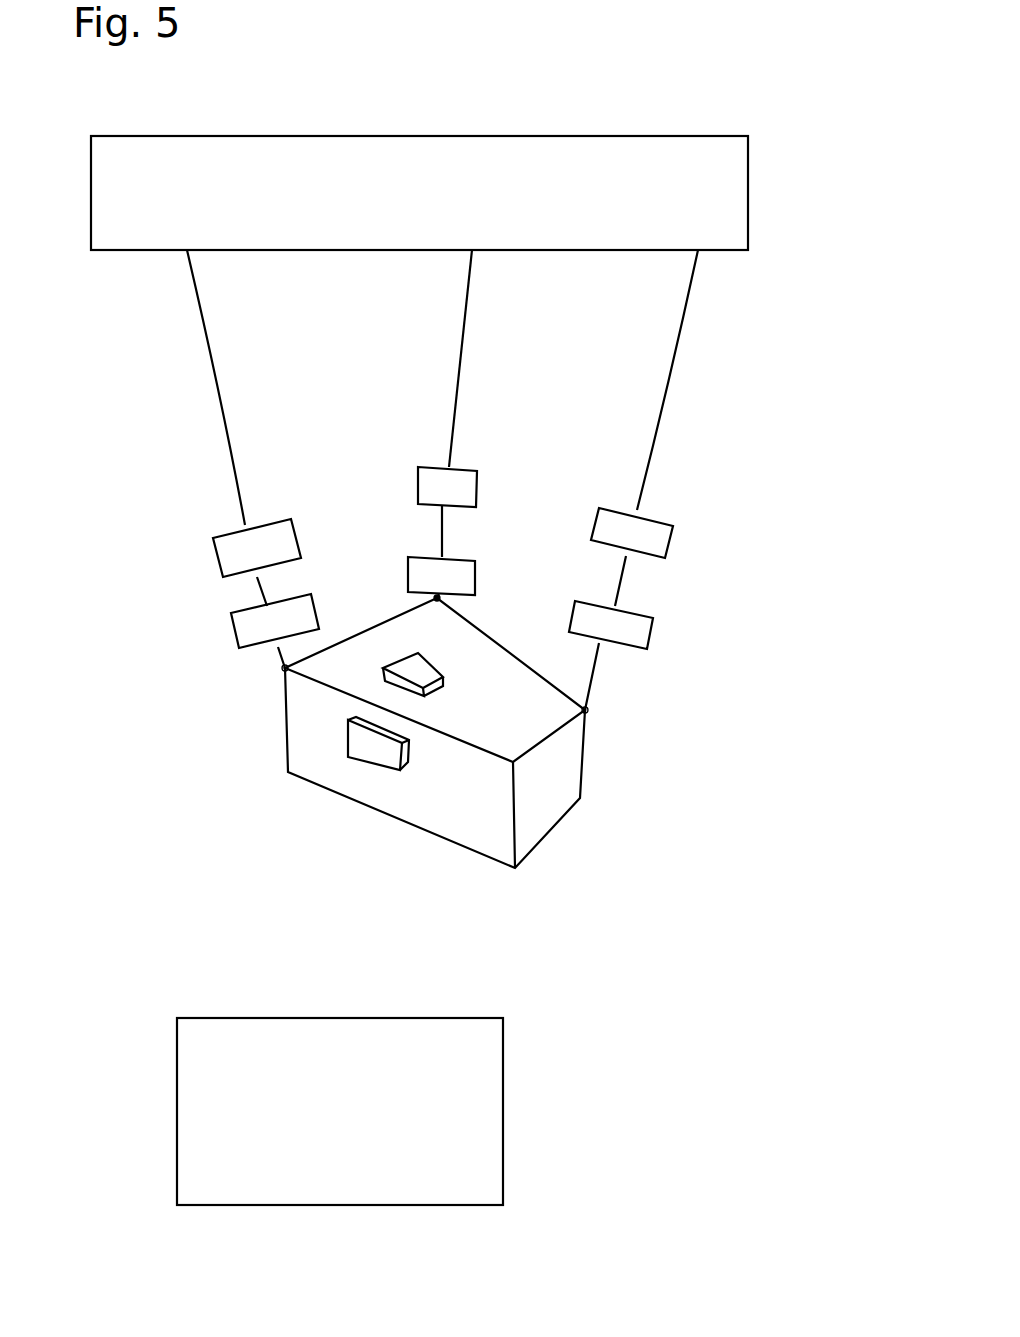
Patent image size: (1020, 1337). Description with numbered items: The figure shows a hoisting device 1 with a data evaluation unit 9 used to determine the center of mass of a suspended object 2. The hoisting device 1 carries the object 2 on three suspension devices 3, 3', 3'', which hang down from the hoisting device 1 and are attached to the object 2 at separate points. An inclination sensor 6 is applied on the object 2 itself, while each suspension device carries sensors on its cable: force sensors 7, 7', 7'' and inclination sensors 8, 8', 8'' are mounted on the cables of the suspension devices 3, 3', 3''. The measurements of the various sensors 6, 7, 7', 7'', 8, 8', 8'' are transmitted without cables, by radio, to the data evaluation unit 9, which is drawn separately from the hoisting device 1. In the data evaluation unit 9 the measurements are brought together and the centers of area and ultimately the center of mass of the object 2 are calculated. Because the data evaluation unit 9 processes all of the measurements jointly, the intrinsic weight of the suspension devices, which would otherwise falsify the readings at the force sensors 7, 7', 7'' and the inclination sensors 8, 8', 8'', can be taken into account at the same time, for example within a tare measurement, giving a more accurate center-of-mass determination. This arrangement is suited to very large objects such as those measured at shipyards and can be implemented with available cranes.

The hoisting device 1 is at (482, 118).
The object 2 is at (287, 751).
The suspension device 3 is at (156, 387).
The suspension device 3' is at (399, 358).
The suspension device 3'' is at (732, 380).
The inclination sensor 6 is at (432, 688).
The force sensor 7 is at (198, 549).
The force sensor 7' is at (402, 462).
The force sensor 7'' is at (689, 527).
The inclination sensor 8 is at (205, 622).
The inclination sensor 8' is at (395, 549).
The inclination sensor 8'' is at (674, 635).
The data evaluation unit 9 is at (534, 1123).